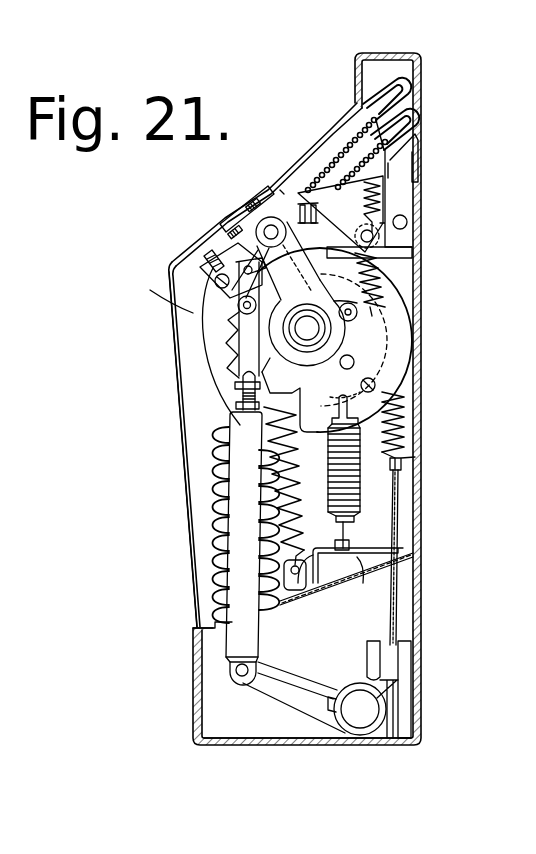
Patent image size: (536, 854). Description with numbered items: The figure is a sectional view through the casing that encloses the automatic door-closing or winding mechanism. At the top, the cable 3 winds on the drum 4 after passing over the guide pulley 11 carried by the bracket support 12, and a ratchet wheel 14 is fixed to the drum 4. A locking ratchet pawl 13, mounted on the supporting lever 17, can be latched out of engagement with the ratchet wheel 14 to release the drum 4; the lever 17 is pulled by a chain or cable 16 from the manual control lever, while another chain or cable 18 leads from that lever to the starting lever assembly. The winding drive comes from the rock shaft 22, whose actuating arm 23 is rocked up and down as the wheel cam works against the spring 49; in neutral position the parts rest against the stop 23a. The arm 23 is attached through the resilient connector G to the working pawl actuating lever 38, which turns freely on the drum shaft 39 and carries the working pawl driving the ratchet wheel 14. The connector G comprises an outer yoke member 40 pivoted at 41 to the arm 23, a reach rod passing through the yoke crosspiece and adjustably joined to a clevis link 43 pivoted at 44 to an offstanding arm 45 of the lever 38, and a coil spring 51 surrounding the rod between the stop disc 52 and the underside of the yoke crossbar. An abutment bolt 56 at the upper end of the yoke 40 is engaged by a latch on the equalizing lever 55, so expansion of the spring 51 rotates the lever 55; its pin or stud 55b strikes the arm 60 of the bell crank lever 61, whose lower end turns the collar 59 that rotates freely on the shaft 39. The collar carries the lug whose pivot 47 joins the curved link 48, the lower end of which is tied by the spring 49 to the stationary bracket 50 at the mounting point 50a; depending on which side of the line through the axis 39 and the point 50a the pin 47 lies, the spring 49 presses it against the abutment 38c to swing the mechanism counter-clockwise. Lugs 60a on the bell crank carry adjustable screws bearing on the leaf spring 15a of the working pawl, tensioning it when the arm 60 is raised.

The cable 3 is at (395, 522).
The drum 4 is at (228, 376).
The guide pulley 11 is at (410, 681).
The bracket support 12 is at (405, 658).
The locking ratchet pawl 13 is at (350, 252).
The ratchet wheel 14 is at (238, 333).
The leaf spring 15a is at (227, 213).
The chain or cable 16 is at (330, 190).
The supporting lever 17 is at (357, 215).
The chain or cable 18 is at (348, 165).
The rock shaft 22 is at (360, 728).
The actuating arm 23 is at (273, 692).
The stop 23a is at (233, 745).
The working pawl actuating lever 38 is at (375, 262).
The abutment 38c is at (205, 330).
The drum shaft 39 is at (323, 338).
The outer yoke member 40 is at (238, 493).
The pivot 41 is at (237, 673).
The clevis link 43 is at (236, 358).
The pivot 44 is at (212, 288).
The offstanding arm 45 is at (208, 252).
The pivot and abutment pin 47 is at (360, 294).
The curved link 48 is at (393, 365).
The spring 49 is at (372, 497).
The stationary bracket 50 is at (377, 548).
The spring mounting point 50a is at (360, 567).
The coil spring 51 is at (245, 522).
The stop disc 52 is at (213, 621).
The equalizing lever 55 is at (215, 265).
The pin or stud 55b is at (236, 262).
The abutment bolt 56 is at (227, 402).
The collar 59 is at (390, 290).
The bell crank arm 60 is at (232, 258).
The lugs 60a is at (277, 188).
The bell crank lever 61 is at (238, 306).
The resilient connector G is at (242, 558).